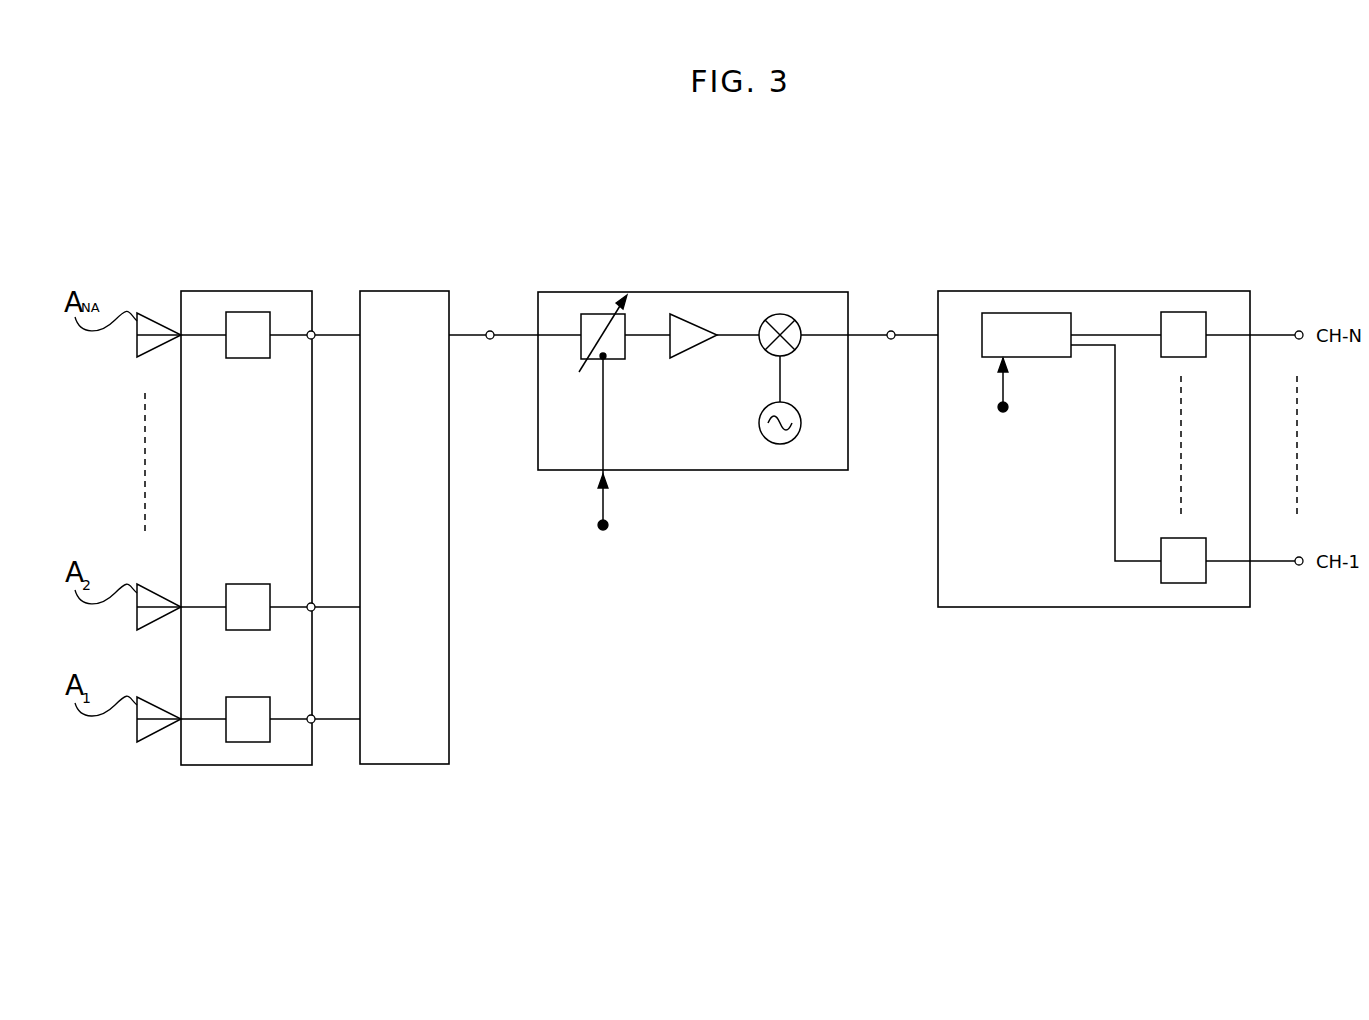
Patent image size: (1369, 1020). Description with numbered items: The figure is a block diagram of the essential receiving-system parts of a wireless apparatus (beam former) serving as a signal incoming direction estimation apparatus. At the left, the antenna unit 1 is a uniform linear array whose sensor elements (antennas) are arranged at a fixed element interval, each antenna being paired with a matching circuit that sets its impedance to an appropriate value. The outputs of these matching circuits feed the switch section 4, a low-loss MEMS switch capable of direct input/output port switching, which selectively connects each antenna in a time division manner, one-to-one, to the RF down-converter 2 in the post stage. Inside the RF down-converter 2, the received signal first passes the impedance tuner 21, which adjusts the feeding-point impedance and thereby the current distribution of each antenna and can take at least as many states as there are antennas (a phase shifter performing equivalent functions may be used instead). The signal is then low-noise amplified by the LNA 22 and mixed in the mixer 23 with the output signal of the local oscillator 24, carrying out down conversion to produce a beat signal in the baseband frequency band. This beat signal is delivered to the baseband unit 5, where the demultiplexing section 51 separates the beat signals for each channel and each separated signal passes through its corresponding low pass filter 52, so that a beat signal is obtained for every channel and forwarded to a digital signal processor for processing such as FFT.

The antenna unit 1 is at (243, 291).
The switch section 4 is at (403, 291).
The RF down-converter 2 is at (657, 292).
The impedance tuner 21 is at (598, 313).
The LNA 22 is at (692, 318).
The mixer 23 is at (777, 314).
The local oscillator 24 is at (801, 421).
The baseband unit 5 is at (1088, 291).
The demultiplexing section 51 is at (1022, 313).
The low pass filter 52 is at (1178, 313).